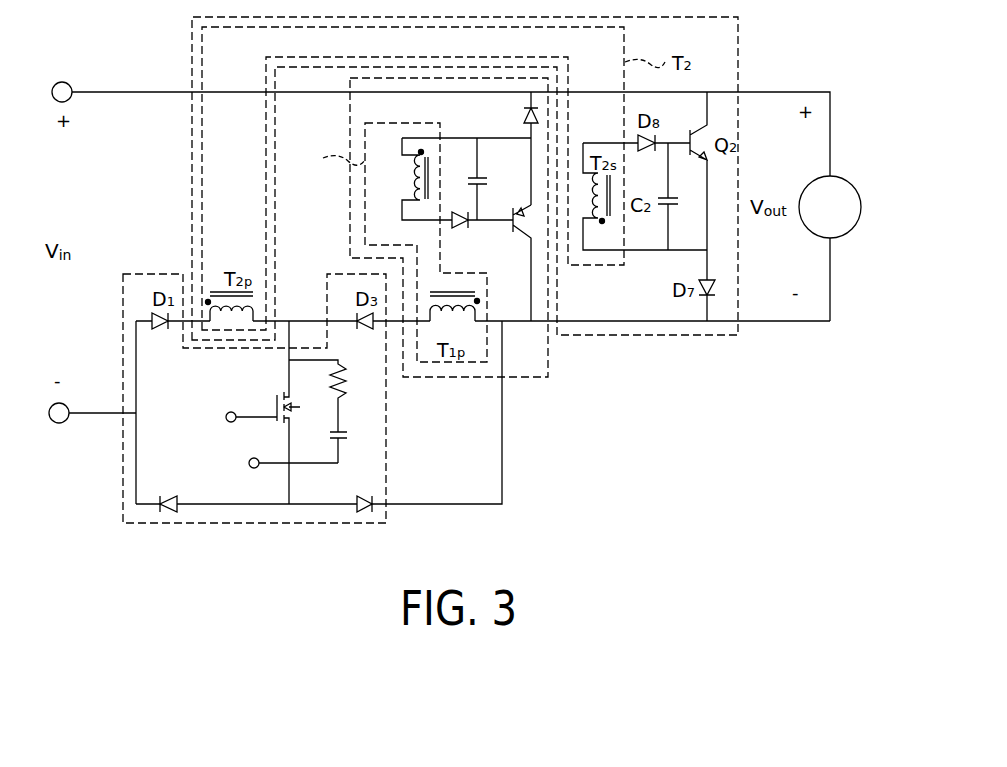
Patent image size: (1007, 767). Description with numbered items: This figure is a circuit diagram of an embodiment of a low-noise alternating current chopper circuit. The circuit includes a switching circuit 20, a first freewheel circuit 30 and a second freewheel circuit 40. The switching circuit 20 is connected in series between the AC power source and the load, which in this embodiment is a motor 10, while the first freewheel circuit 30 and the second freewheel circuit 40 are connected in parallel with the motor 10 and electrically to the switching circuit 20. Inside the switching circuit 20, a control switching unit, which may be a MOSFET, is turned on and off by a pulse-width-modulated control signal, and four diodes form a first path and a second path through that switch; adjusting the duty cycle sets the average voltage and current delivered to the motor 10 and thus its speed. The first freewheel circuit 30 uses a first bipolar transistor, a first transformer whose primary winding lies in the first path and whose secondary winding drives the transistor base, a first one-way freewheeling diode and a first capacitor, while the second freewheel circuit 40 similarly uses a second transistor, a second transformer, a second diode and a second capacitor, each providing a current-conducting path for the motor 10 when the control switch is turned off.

The motor 10 is at (835, 176).
The switching circuit 20 is at (145, 273).
The first freewheel circuit 30 is at (350, 118).
The second freewheel circuit 40 is at (740, 40).